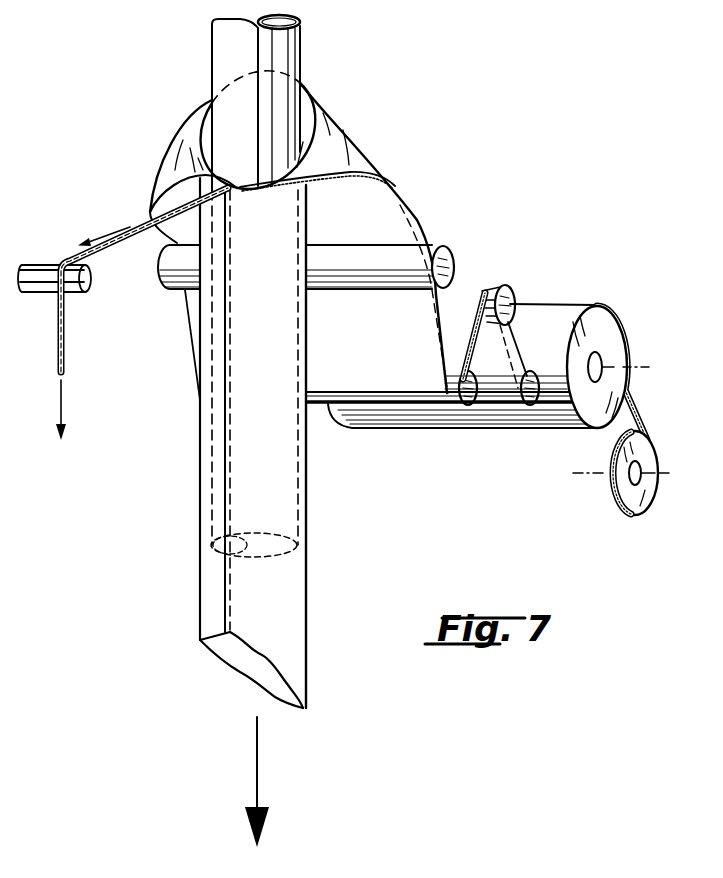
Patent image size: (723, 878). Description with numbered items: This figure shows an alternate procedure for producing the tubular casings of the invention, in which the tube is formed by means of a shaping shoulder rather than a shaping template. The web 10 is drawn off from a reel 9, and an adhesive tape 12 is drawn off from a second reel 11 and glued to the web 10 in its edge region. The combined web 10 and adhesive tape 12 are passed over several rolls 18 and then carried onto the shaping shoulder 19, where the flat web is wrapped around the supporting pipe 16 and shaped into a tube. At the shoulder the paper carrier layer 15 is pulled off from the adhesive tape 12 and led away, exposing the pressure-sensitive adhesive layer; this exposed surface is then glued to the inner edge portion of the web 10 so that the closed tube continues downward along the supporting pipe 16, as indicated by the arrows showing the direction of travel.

The supporting pipe 16 is at (224, 70).
The shaping shoulder 19 is at (353, 154).
The rolls 18 is at (453, 256).
The adhesive tape 12 is at (637, 395).
The web 10 is at (387, 378).
The reel 9 is at (608, 323).
The reel 11 is at (636, 505).
The paper carrier layer 15 is at (58, 344).